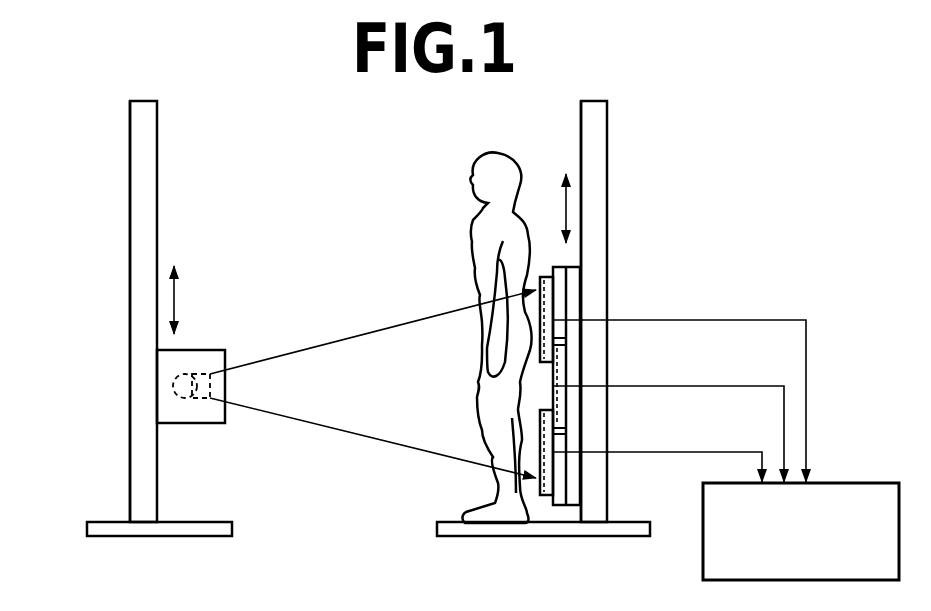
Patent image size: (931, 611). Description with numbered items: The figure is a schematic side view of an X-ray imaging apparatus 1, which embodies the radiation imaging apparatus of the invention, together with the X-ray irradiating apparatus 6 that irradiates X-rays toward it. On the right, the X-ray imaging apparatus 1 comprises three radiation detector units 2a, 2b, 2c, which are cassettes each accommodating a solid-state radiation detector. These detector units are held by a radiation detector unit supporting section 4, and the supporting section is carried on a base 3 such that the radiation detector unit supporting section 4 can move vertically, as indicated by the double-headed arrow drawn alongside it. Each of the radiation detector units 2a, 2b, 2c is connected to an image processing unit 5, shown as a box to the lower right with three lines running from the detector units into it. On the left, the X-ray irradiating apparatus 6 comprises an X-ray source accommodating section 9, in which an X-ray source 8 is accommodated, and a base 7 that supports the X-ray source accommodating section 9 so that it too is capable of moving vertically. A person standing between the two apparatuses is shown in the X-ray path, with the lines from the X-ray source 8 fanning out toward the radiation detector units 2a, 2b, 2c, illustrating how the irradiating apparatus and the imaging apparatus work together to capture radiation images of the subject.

The X-ray imaging apparatus 1 is at (623, 111).
The radiation detector unit 2a is at (556, 301).
The radiation detector unit 2b is at (567, 372).
The radiation detector unit 2c is at (556, 477).
The base 3 is at (597, 173).
The radiation detector unit supporting section 4 is at (575, 283).
The image processing unit 5 is at (838, 483).
The X-ray irradiating apparatus 6 is at (173, 111).
The base 7 is at (137, 387).
The X-ray source 8 is at (184, 374).
The X-ray source accommodating section 9 is at (211, 357).